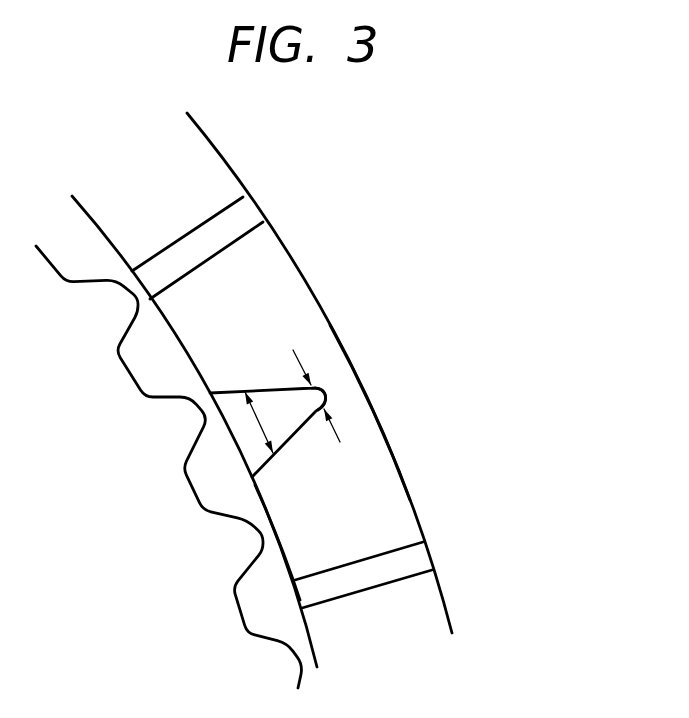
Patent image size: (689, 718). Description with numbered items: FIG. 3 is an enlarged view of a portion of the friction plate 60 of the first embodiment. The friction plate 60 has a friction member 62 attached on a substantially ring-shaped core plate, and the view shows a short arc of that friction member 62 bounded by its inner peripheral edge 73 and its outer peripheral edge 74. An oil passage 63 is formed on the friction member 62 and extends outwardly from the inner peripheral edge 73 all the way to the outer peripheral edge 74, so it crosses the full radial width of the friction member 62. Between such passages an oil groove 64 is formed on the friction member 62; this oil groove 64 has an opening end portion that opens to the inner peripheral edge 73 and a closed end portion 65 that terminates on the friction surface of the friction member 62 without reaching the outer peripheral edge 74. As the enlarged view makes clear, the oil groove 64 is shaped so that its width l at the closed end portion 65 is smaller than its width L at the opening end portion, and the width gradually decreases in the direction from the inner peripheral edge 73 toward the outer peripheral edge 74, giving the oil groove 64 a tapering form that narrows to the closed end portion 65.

The friction plate 60 is at (480, 211).
The friction member 62 is at (173, 165).
The oil passage 63 is at (225, 223).
The oil groove 64 is at (267, 402).
The closed end portion 65 is at (323, 392).
The inner peripheral edge 73 is at (285, 563).
The outer peripheral edge 74 is at (408, 492).
The width at the opening end portion L is at (262, 428).
The width at the closed end portion l is at (311, 415).